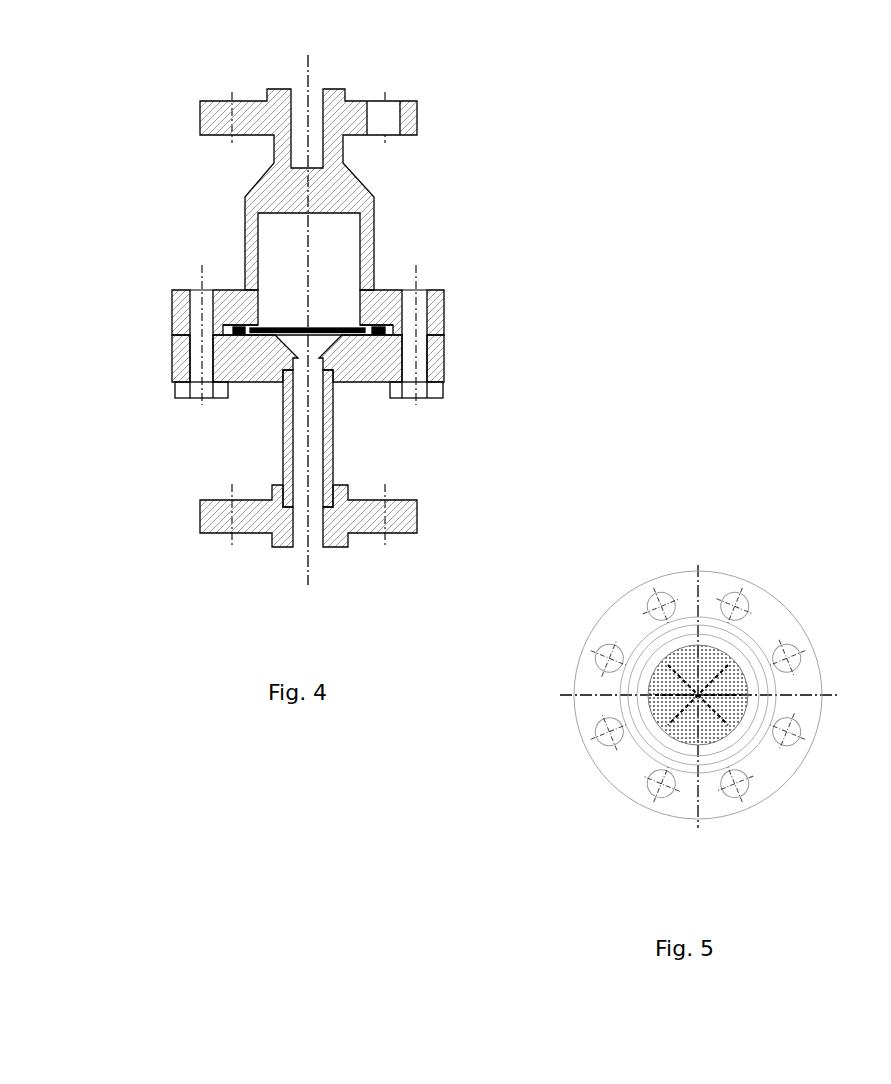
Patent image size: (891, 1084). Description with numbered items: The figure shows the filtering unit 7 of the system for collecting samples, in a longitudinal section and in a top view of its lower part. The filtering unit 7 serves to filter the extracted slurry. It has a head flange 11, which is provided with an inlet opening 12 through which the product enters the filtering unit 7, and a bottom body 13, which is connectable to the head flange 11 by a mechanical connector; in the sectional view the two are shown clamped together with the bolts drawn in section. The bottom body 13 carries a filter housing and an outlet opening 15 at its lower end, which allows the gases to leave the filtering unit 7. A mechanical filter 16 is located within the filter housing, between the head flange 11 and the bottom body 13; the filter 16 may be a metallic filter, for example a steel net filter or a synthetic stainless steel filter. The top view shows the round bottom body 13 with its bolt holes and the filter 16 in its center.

In FIG. 4, the filtering unit 7 is at (515, 142).
In FIG. 5, the filtering unit 7 is at (890, 150).
In FIG. 4, the head flange 11 is at (243, 288).
In FIG. 4, the inlet opening 12 is at (312, 108).
In FIG. 4, the bottom body 13 is at (258, 372).
In FIG. 5, the bottom body 13 is at (662, 516).
In FIG. 4, the outlet opening 15 is at (310, 525).
In FIG. 4, the mechanical filter 16 is at (332, 325).
In FIG. 5, the mechanical filter 16 is at (708, 664).